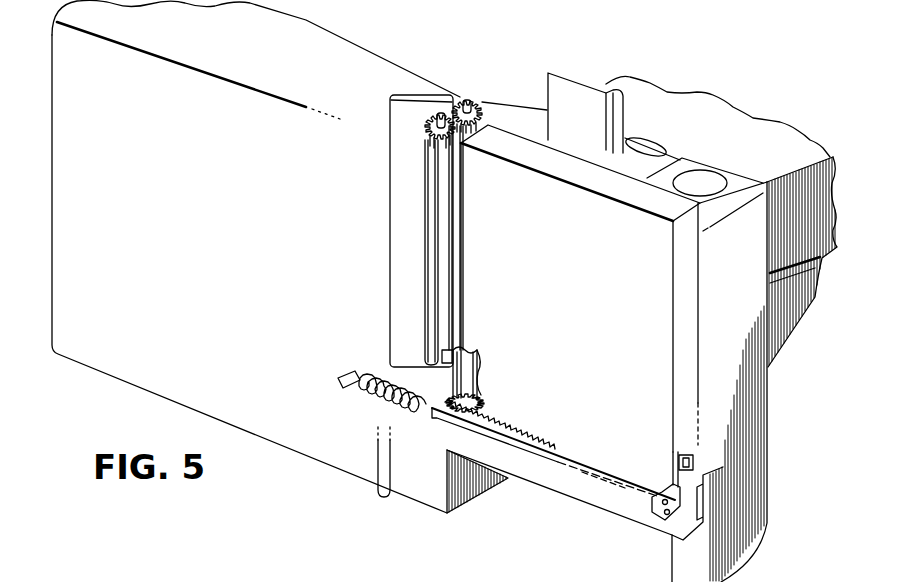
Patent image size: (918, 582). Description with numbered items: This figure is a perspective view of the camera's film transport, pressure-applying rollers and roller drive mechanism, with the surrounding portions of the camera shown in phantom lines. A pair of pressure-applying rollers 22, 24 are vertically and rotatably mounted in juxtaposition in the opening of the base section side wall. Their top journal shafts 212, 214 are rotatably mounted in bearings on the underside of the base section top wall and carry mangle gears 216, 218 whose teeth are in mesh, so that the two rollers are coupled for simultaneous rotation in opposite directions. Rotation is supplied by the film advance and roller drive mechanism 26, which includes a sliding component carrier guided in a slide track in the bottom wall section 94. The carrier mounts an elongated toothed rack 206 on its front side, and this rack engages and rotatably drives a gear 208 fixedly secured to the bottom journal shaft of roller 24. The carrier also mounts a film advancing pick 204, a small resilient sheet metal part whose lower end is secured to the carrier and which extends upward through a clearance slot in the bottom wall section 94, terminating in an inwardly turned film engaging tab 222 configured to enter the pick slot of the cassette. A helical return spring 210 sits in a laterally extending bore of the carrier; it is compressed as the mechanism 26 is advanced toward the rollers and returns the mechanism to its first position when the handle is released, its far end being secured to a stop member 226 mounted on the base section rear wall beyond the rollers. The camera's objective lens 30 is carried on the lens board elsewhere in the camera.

The pressure-applying roller 22 is at (433, 265).
The pressure-applying roller 24 is at (468, 352).
The film advance and roller drive mechanism 26 is at (588, 487).
The objective lens 30 is at (428, 291).
The bottom wall section 94 is at (553, 484).
The film advancing pick 204 is at (676, 452).
The toothed rack 206 is at (516, 432).
The gear 208 is at (484, 406).
The return spring 210 is at (407, 414).
The top journal shaft 212 is at (442, 112).
The top journal shaft 214 is at (469, 100).
The mangle gear 216 is at (425, 127).
The mangle gear 218 is at (481, 111).
The film engaging tab 222 is at (684, 464).
The stop member 226 is at (346, 378).